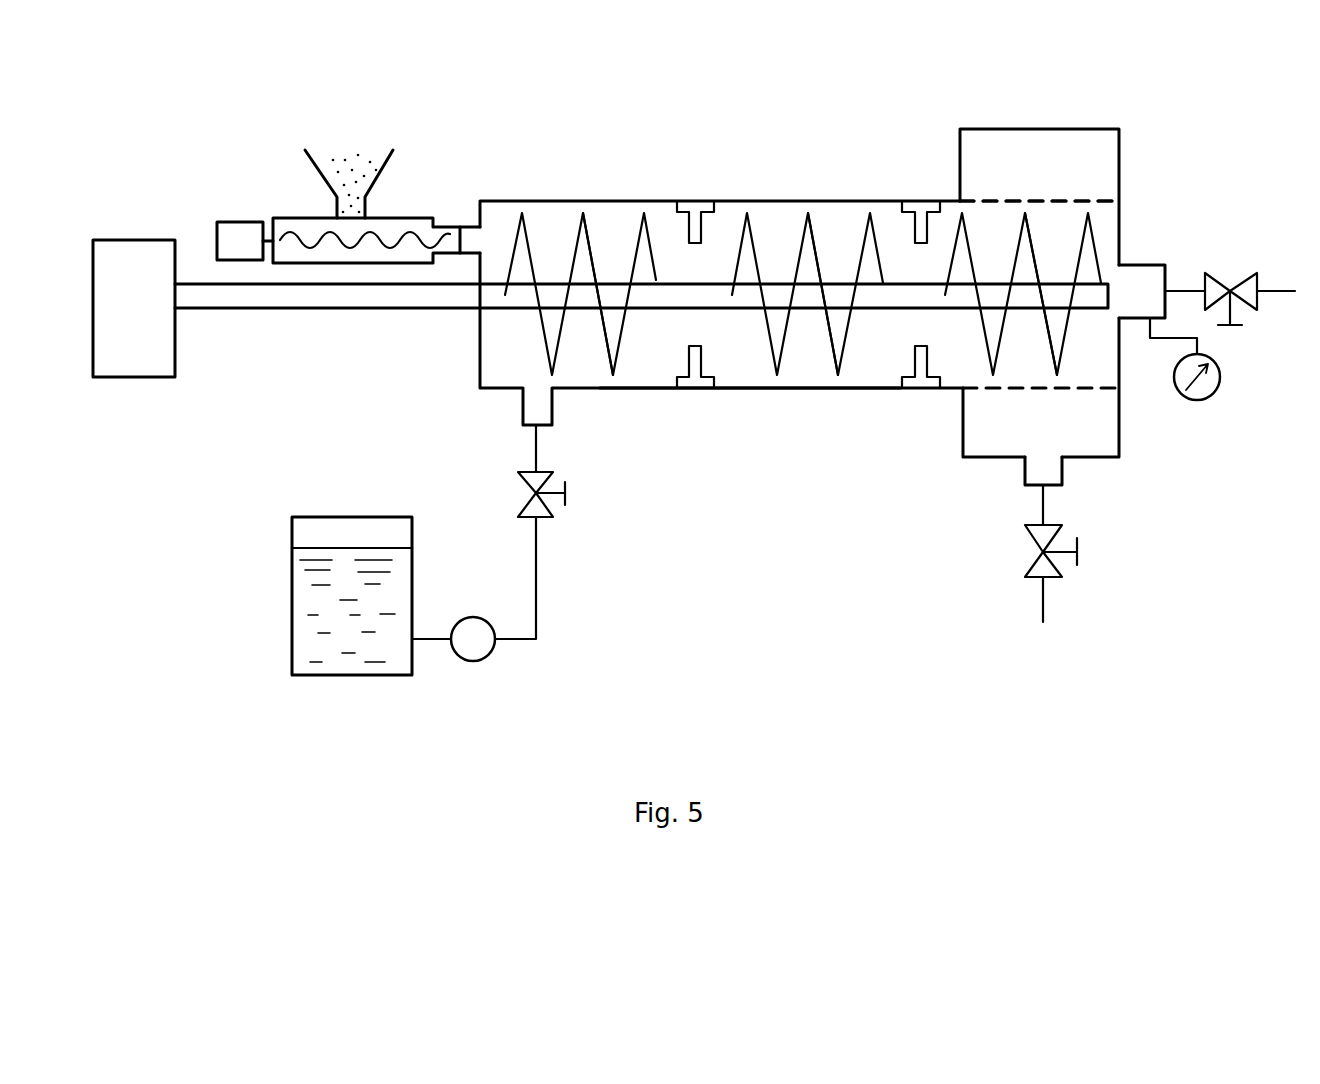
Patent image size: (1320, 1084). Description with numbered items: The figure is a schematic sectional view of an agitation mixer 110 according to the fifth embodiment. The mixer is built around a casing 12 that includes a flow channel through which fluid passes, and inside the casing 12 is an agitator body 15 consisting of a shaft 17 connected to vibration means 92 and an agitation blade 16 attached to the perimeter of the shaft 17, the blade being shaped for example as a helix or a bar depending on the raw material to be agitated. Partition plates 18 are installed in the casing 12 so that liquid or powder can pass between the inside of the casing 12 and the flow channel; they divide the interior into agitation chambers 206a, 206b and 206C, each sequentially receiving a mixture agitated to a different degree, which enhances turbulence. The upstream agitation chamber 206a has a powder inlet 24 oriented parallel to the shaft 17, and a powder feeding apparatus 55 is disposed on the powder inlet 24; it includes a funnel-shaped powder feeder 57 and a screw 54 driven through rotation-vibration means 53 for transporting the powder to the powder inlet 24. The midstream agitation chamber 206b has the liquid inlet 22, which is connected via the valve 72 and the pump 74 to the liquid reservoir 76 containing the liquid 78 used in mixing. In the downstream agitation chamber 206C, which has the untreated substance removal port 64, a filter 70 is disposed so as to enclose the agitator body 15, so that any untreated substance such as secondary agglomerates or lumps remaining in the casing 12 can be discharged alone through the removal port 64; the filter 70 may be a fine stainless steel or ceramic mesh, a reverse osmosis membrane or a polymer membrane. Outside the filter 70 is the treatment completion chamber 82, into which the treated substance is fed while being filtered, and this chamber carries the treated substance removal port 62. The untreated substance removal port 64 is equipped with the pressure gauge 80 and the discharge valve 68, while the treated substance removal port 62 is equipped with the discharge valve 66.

The casing 12 is at (763, 390).
The agitator body 15 is at (592, 242).
The agitation blade 16 is at (753, 275).
The shaft 17 is at (356, 309).
The partition plates 18 is at (695, 204).
The liquid inlet 22 is at (522, 417).
The powder inlet 24 is at (468, 225).
The rotation-vibration means 53 is at (243, 222).
The feeder screw 54 is at (330, 234).
The powder feeding apparatus 55 is at (400, 217).
The funnel-shaped powder feeder 57 is at (393, 155).
The treated substance removal port 62 is at (1062, 470).
The untreated substance removal port 64 is at (1148, 265).
The discharge valve 66 is at (1058, 580).
The discharge valve 68 is at (1243, 273).
The filter 70 is at (1053, 197).
The valve 72 is at (525, 482).
The pump 74 is at (497, 648).
The liquid reservoir 76 is at (292, 527).
The liquid 78 is at (302, 583).
The pressure gauge 80 is at (1220, 377).
The treatment completion chamber 82 is at (1040, 129).
The vibration means 92 is at (137, 240).
The agitation mixer 110 is at (802, 423).
The agitation chamber 206a is at (600, 343).
The agitation chamber 206b is at (862, 390).
The agitation chamber 206C is at (1103, 370).